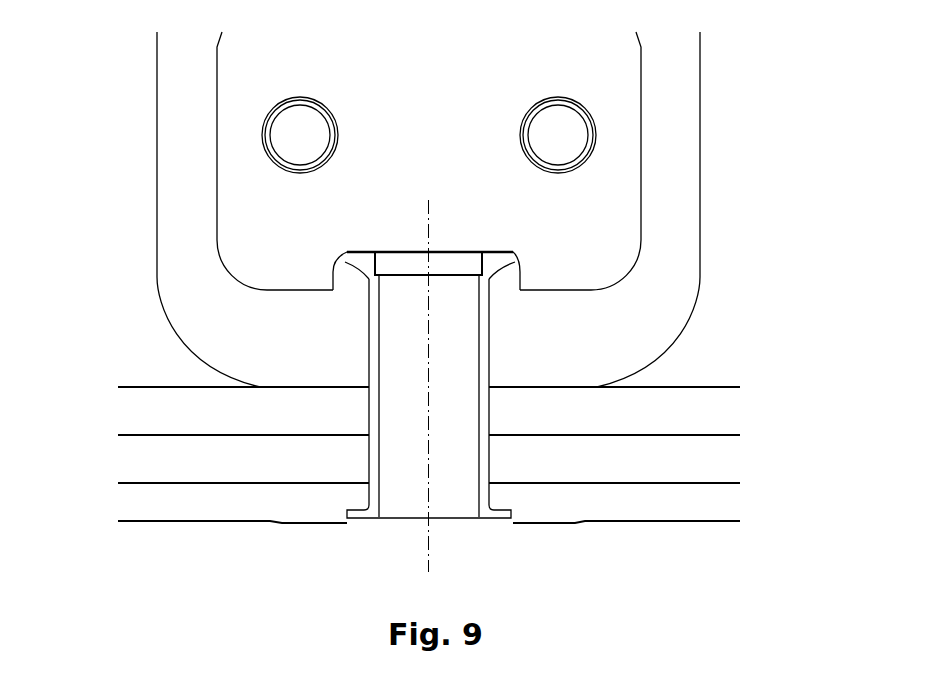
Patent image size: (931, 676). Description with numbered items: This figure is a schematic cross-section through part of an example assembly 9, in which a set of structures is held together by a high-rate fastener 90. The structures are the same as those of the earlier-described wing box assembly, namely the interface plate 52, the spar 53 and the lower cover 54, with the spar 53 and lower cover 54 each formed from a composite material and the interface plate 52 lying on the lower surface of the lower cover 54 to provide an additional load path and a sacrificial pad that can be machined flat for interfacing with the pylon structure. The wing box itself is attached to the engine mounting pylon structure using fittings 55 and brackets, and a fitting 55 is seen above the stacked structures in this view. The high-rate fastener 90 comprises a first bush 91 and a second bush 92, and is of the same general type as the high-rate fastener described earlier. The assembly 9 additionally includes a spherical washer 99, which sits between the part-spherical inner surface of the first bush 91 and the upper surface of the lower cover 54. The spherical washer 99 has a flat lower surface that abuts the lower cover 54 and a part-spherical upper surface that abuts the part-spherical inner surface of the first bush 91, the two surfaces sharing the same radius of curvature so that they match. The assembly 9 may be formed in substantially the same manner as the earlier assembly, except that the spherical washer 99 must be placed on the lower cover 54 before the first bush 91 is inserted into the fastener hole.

The assembly 9 is at (802, 305).
The interface plate 52 is at (135, 504).
The spar 53 is at (145, 418).
The lower cover 54 is at (138, 463).
The fitting 55 is at (190, 280).
The high-rate fastener 90 is at (495, 555).
The first bush 91 is at (368, 332).
The second bush 92 is at (366, 455).
The spherical washer 99 is at (507, 284).